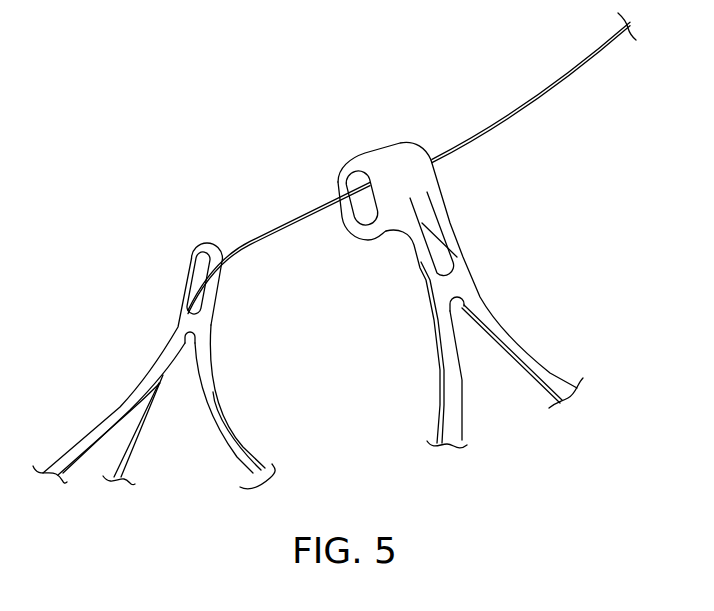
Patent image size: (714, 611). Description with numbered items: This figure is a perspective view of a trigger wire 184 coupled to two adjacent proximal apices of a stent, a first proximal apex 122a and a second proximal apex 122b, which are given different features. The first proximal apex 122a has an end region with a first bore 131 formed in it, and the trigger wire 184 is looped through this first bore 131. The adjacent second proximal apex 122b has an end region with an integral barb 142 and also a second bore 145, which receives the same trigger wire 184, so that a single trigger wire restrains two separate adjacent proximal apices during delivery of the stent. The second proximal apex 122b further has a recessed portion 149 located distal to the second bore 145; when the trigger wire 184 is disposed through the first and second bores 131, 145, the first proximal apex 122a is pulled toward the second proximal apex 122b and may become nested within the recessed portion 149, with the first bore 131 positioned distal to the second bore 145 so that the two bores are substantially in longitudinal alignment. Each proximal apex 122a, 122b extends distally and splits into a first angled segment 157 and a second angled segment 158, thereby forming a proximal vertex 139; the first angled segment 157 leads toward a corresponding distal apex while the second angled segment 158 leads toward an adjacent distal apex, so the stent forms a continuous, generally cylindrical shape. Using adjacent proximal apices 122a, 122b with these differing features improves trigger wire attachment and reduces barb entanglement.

The first proximal apex 122a is at (175, 312).
The second proximal apex 122b is at (426, 241).
The trigger wire 184 is at (298, 212).
The first bore 131 is at (200, 273).
The proximal vertex 139 is at (187, 340).
The integral barb 142 is at (440, 240).
The second bore 145 is at (365, 209).
The recessed portion 149 is at (388, 234).
The first angled segment 157 is at (447, 383).
The second angled segment 158 is at (238, 447).